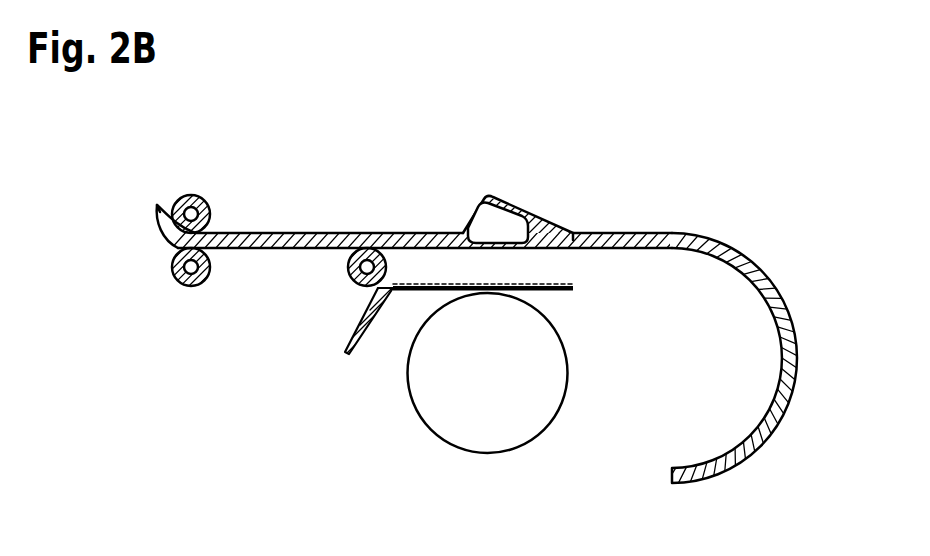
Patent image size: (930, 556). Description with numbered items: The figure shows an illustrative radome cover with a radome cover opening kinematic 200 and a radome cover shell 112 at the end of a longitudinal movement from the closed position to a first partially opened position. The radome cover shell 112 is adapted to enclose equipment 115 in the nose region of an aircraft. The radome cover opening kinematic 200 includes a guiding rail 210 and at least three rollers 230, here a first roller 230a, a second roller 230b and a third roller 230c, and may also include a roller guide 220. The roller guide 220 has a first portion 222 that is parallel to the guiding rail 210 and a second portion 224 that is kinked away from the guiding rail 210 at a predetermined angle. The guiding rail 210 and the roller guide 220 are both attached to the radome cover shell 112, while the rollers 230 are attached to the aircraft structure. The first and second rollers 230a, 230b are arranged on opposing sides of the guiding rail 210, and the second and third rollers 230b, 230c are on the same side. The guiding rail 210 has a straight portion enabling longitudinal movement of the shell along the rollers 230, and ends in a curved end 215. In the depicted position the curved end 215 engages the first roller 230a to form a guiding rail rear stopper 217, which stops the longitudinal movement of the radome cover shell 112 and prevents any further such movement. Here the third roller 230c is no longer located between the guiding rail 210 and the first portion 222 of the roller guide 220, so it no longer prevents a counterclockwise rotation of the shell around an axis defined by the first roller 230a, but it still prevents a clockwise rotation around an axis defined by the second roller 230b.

The radome cover shell 112 is at (755, 272).
The equipment 115 is at (480, 427).
The radome cover opening kinematic 200 is at (362, 191).
The guiding rail 210 is at (428, 232).
The curved end 215 is at (166, 230).
The guiding rail rear stopper 217 is at (139, 200).
The roller guide 220 is at (386, 305).
The first portion 222 is at (553, 291).
The second portion 224 is at (350, 339).
The rollers 230 is at (228, 191).
The first roller 230a is at (178, 198).
The second roller 230b is at (175, 278).
The third roller 230c is at (351, 278).